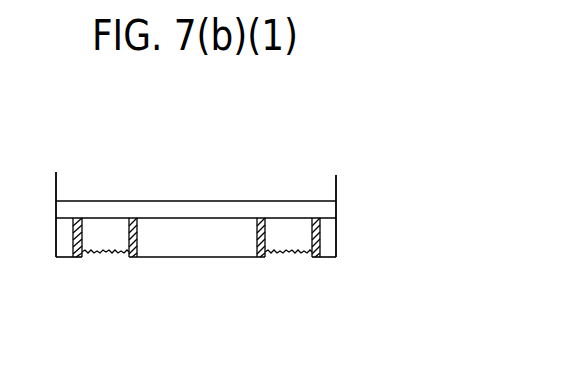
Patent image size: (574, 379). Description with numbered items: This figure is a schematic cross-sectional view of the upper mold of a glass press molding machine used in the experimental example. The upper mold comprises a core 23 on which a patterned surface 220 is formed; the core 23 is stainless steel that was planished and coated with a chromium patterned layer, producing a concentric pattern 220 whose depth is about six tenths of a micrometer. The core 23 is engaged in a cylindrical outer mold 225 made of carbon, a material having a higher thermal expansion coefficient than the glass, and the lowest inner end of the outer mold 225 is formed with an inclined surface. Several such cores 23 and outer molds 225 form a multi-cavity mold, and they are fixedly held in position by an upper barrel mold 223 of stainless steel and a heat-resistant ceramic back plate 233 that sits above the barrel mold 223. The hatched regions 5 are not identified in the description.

The brazing material 5 is at (82, 257).
The core 23 is at (98, 232).
The patterned surface 220 is at (105, 257).
The upper barrel mold 223 is at (228, 252).
The outer mold 225 is at (130, 222).
The back plate 233 is at (232, 210).